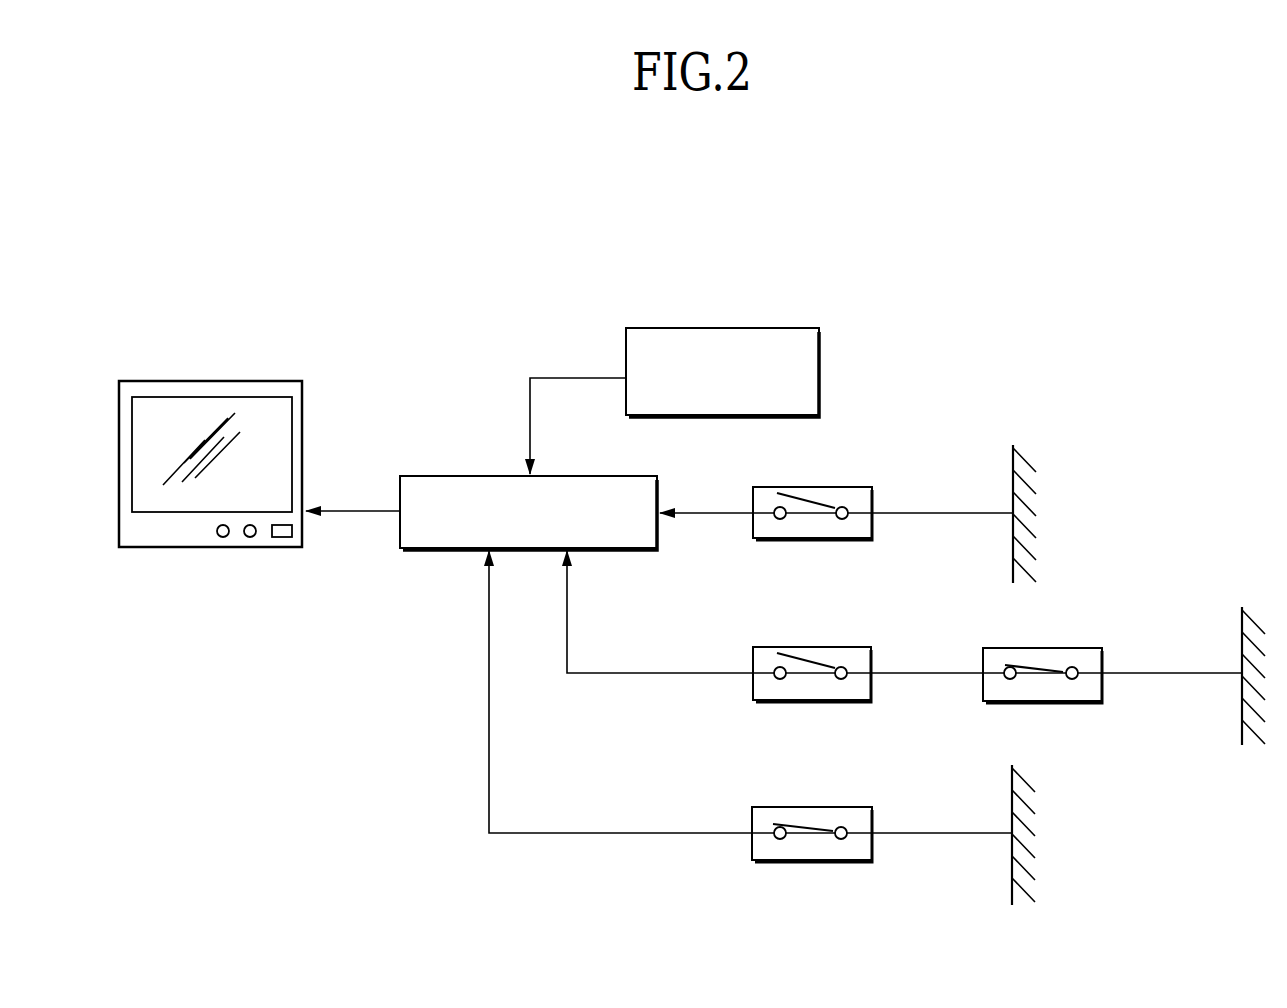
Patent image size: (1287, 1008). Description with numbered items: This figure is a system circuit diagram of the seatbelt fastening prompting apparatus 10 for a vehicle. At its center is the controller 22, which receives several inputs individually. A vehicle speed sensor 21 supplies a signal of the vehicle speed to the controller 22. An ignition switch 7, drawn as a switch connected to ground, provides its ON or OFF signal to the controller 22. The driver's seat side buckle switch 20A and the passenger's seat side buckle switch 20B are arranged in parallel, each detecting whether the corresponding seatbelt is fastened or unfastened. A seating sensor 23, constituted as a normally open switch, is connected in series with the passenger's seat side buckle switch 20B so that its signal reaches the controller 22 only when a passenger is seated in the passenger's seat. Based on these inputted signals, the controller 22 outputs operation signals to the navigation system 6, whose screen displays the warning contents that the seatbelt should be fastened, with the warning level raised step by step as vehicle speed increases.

The navigation system 6 is at (237, 381).
The ignition switch 7 is at (815, 487).
The seatbelt fastening prompting apparatus 10 is at (663, 295).
The vehicle speed sensor 21 is at (720, 328).
The controller 22 is at (468, 476).
The seating sensor 23 is at (810, 647).
The driver's seat side buckle switch 20A is at (810, 807).
The passenger's seat side buckle switch 20B is at (1053, 648).